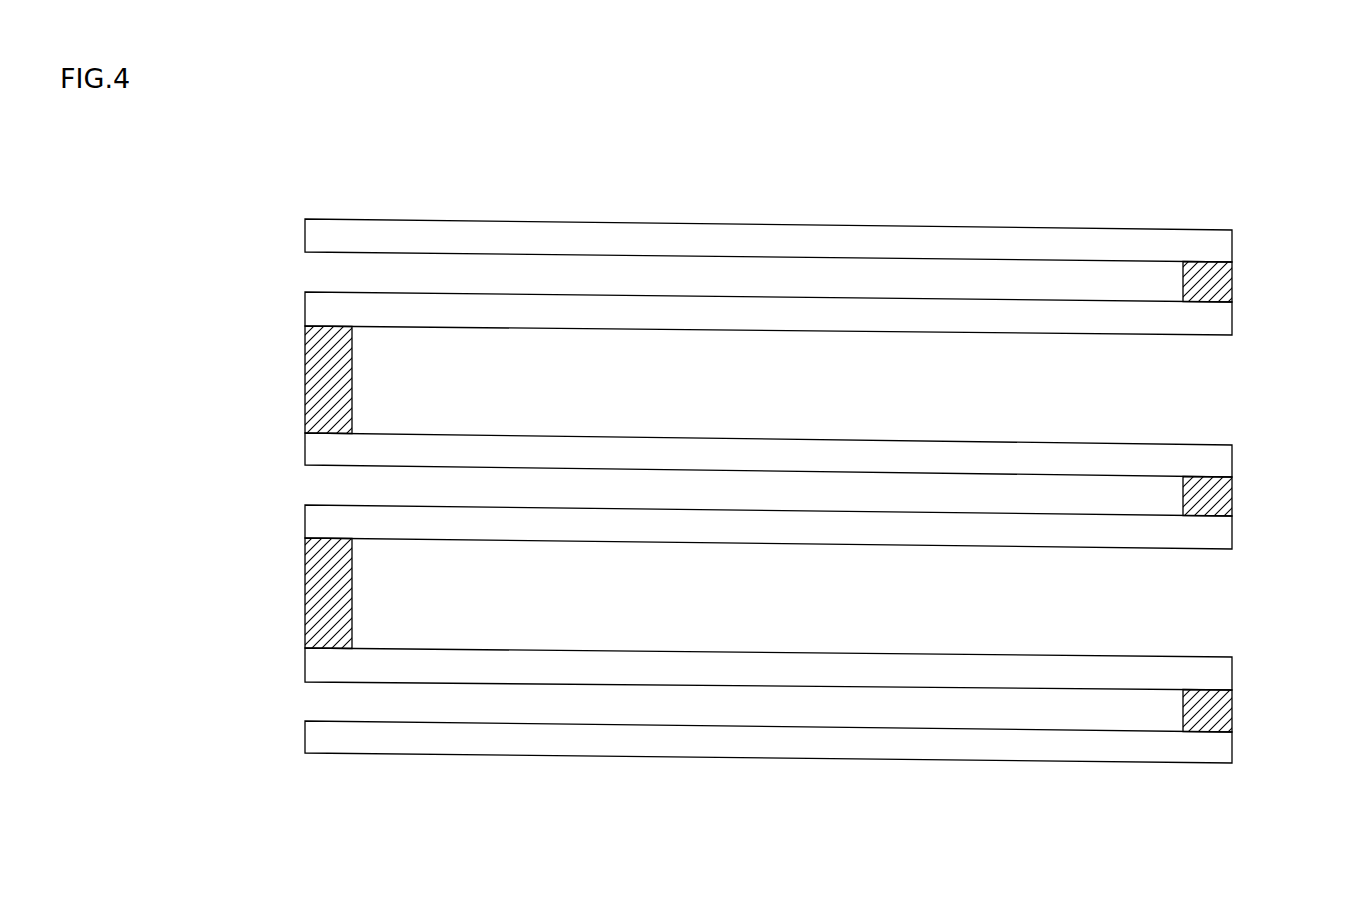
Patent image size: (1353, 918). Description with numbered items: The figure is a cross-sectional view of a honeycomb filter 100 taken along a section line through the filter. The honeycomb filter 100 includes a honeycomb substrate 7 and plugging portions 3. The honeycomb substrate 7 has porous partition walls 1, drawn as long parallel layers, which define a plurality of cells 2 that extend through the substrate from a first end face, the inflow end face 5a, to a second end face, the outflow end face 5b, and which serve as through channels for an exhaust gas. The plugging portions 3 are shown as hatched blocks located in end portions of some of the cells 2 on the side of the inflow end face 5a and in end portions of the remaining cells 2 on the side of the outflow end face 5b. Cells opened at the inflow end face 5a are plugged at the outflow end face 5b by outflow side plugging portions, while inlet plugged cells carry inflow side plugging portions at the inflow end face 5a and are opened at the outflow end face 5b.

The honeycomb filter 100 is at (1173, 118).
The porous partition walls 1 is at (1058, 235).
The plugging portions 3 is at (1219, 287).
The cells 2 is at (1160, 496).
The honeycomb substrate 7 is at (865, 760).
The inflow end face 5a is at (303, 772).
The outflow end face 5b is at (1230, 785).